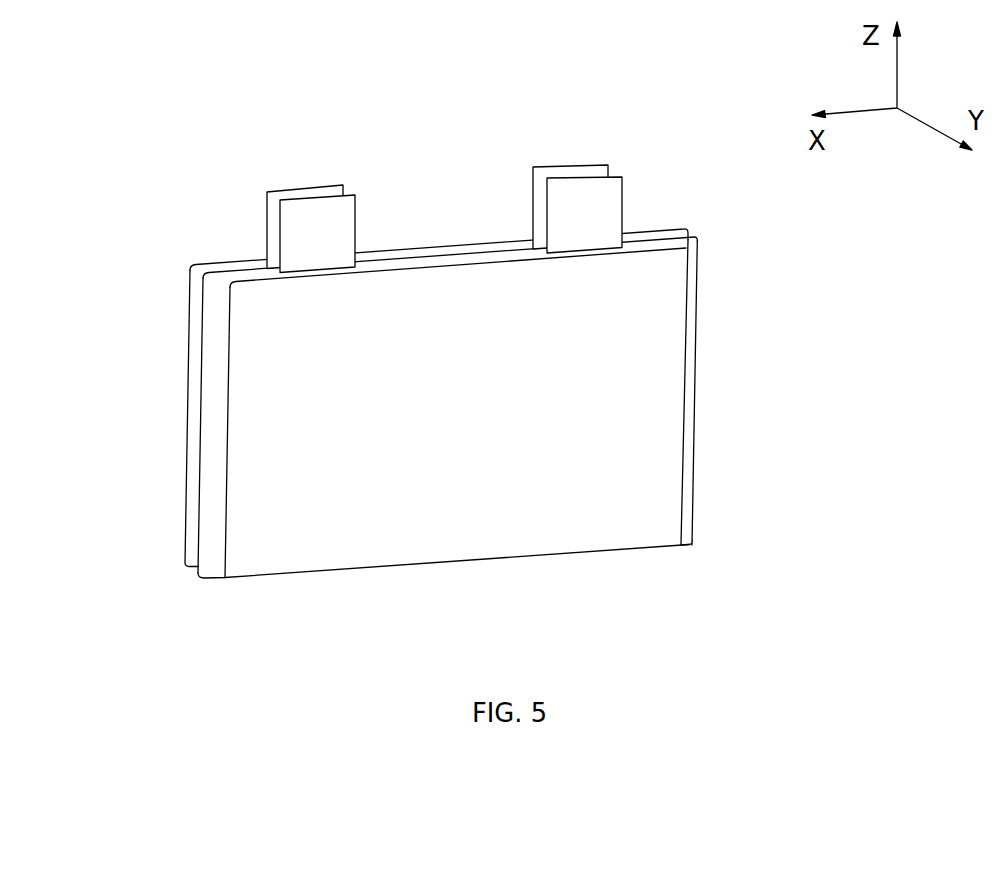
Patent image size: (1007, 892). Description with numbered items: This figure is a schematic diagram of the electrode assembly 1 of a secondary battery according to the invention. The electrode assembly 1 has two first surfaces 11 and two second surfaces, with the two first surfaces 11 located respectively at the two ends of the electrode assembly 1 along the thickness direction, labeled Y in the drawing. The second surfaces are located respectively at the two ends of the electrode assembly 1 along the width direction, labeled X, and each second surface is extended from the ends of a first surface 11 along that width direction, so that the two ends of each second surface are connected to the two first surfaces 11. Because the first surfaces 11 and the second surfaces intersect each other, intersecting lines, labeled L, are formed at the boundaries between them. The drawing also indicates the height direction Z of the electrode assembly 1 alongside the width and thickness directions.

The electrode assembly 1 is at (406, 396).
The first surface 11 is at (405, 537).